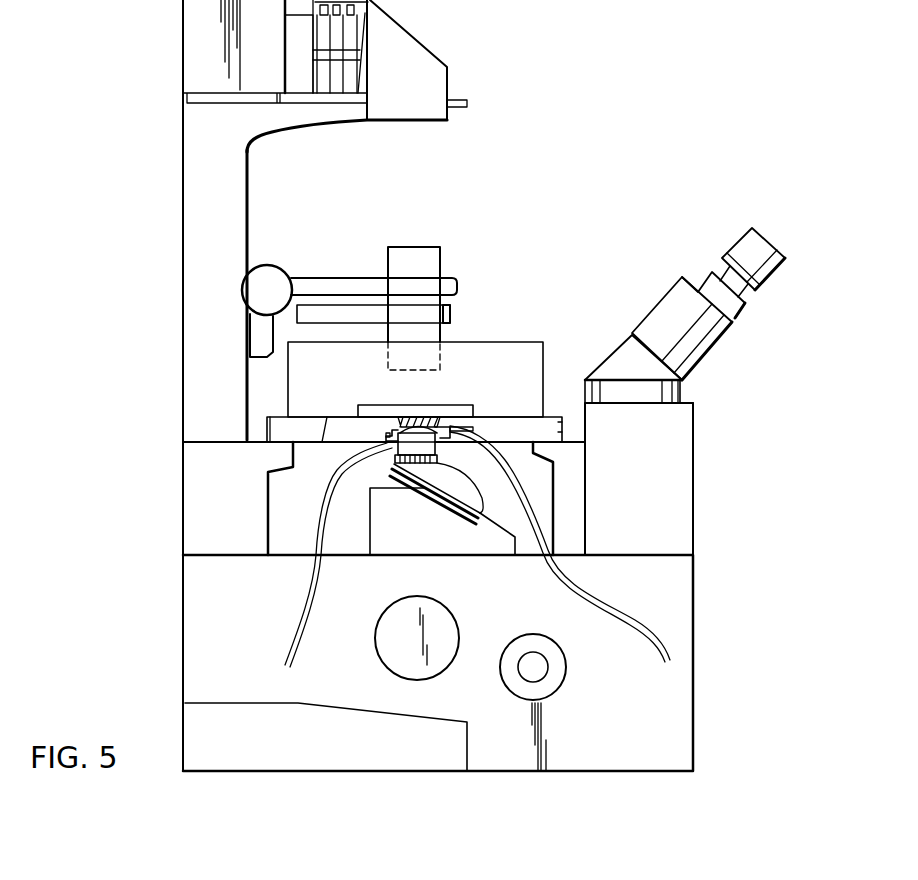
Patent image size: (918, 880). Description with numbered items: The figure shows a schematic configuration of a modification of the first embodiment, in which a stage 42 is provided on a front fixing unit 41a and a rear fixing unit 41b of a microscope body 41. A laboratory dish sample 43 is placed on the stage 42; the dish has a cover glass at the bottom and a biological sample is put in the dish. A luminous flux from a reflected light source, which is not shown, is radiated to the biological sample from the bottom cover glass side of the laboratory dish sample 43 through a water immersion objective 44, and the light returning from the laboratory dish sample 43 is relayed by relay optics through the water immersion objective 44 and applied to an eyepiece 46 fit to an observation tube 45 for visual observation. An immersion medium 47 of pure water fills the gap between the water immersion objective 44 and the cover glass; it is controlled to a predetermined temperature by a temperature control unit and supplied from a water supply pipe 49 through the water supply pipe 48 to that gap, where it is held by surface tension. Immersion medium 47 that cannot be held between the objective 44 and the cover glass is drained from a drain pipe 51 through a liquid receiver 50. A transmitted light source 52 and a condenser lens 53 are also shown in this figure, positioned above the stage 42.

The microscope body 41 is at (650, 753).
The front fixing unit 41a is at (572, 492).
The rear fixing unit 41b is at (207, 463).
The stage 42 is at (282, 428).
The laboratory dish sample 43 is at (423, 410).
The water immersion objective 44 is at (425, 443).
The observation tube 45 is at (705, 355).
The eyepiece 46 is at (772, 280).
The immersion medium 47 is at (512, 415).
The water supply pipe 48 is at (632, 613).
The water supply pipe 49 is at (468, 417).
The liquid receiver 50 is at (387, 443).
The drain pipe 51 is at (295, 615).
The transmitted light source 52 is at (427, 77).
The condenser lens 53 is at (413, 257).